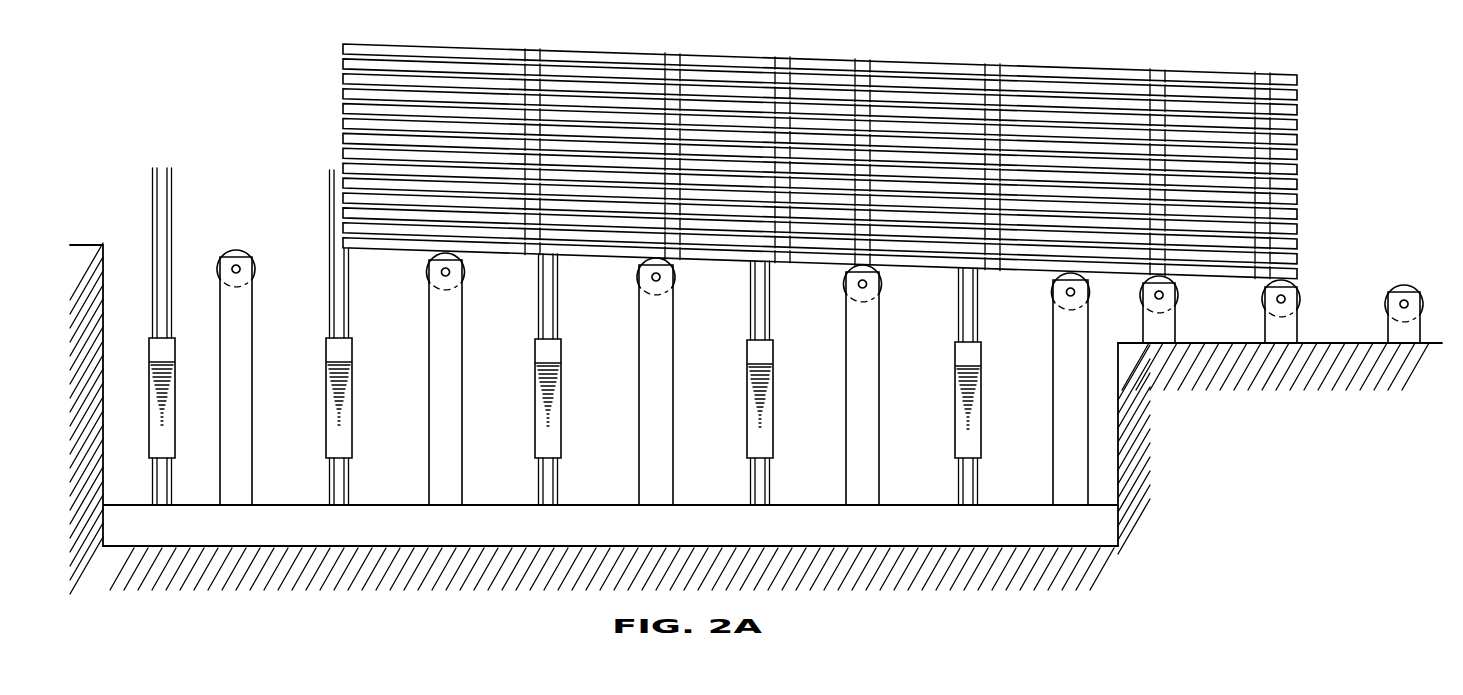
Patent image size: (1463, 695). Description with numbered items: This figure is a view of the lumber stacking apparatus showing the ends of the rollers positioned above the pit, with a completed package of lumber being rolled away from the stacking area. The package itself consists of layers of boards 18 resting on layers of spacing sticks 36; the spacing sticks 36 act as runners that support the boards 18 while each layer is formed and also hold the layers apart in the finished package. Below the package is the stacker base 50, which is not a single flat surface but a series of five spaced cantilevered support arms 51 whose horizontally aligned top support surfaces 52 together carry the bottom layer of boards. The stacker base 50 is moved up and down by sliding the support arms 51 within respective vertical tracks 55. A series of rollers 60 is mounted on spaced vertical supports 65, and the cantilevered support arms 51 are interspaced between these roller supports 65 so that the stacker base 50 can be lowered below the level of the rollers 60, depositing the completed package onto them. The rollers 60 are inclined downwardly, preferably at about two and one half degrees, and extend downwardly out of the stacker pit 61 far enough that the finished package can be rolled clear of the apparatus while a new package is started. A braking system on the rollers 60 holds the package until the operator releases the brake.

The boards 18 is at (1297, 197).
The spacing sticks 36 is at (1258, 85).
The stacker base 50 is at (566, 336).
The cantilevered support arms 51 is at (975, 405).
The top support surfaces 52 is at (962, 342).
The vertical tracks 55 is at (970, 485).
The rollers 60 is at (1391, 285).
The stacker pit 61 is at (498, 440).
The vertical supports 65 is at (1388, 325).